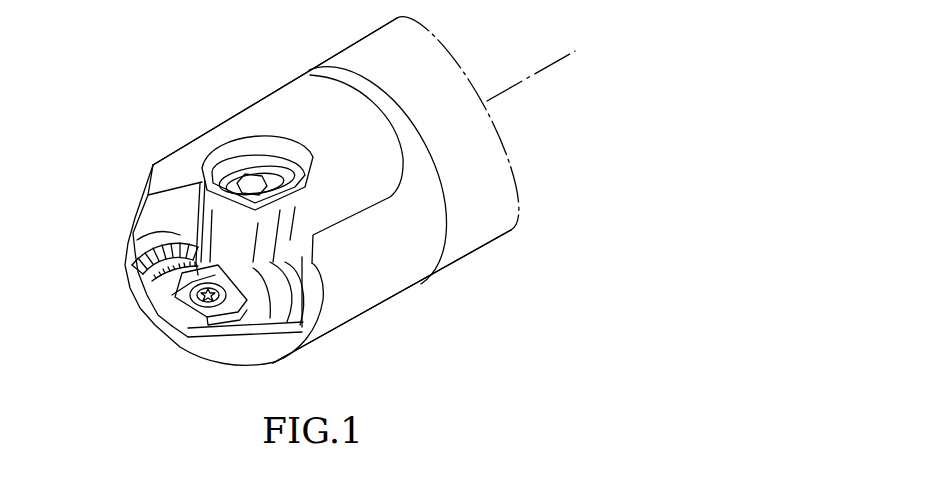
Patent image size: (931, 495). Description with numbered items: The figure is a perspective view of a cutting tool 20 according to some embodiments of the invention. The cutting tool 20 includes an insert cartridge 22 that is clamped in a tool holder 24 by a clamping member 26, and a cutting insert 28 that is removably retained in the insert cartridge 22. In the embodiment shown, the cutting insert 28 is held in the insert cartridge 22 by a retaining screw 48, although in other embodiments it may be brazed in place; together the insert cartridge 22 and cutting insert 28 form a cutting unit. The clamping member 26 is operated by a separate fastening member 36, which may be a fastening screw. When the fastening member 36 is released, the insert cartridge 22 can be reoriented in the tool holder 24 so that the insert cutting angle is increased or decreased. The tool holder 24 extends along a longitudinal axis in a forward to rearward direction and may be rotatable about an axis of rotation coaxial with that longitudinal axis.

The cutting tool 20 is at (283, 68).
The insert cartridge 22 is at (258, 296).
The tool holder 24 is at (370, 270).
The clamping member 26 is at (223, 229).
The cutting insert 28 is at (198, 315).
The fastening member 36 is at (240, 180).
The retaining screw 48 is at (192, 291).